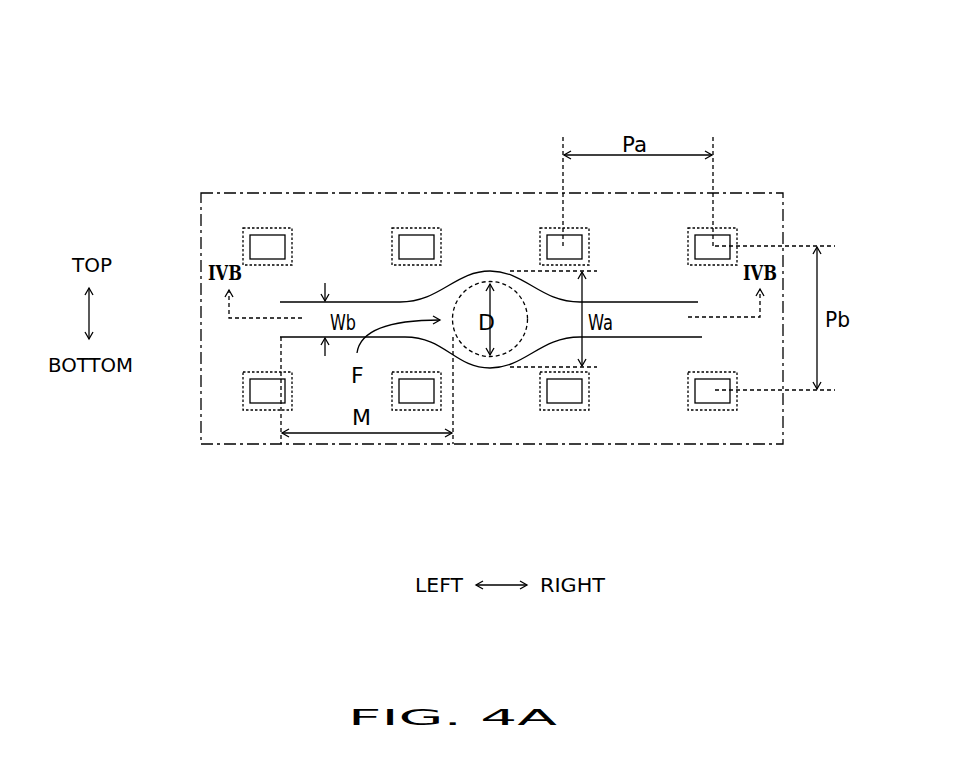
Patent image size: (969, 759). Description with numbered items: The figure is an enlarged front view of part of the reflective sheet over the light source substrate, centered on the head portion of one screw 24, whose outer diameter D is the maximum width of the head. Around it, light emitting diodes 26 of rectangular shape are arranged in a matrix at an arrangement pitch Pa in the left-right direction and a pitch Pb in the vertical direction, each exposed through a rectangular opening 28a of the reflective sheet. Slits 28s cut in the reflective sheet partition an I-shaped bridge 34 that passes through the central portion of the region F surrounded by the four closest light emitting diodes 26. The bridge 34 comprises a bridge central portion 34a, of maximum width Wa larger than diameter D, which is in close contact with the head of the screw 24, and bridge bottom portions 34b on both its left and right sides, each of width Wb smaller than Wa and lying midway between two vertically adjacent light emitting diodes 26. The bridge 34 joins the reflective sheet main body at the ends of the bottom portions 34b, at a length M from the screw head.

The screw 24 is at (483, 357).
The light emitting diode 26 is at (268, 247).
The opening 28a is at (258, 245).
The slit 28s is at (668, 306).
The bridge 34 is at (485, 270).
The bridge central portion 34a is at (515, 362).
The bridge bottom portion 34b is at (360, 300).